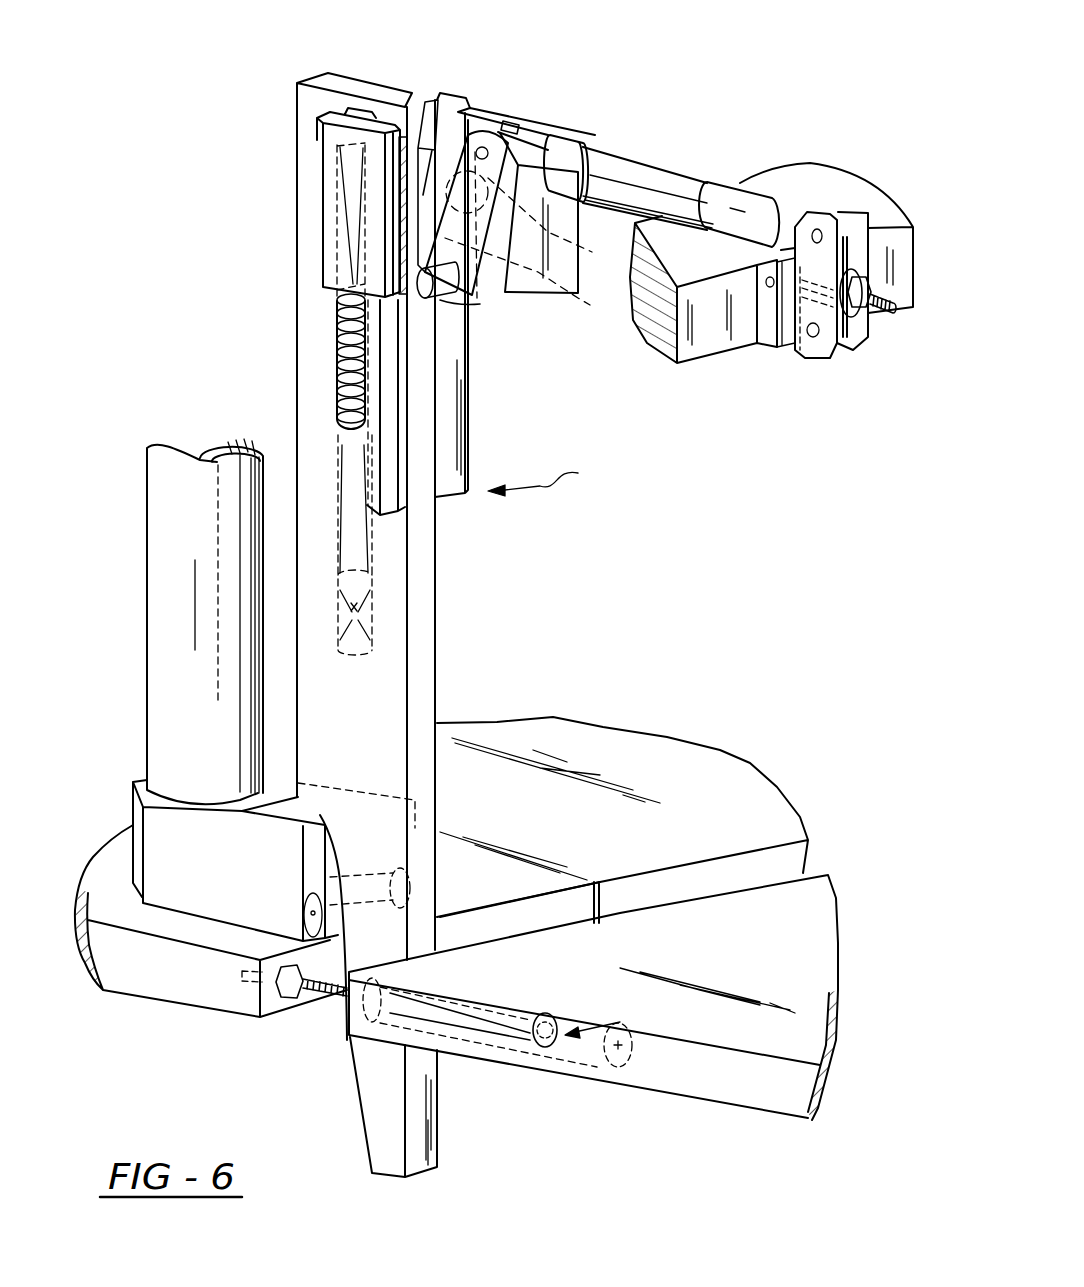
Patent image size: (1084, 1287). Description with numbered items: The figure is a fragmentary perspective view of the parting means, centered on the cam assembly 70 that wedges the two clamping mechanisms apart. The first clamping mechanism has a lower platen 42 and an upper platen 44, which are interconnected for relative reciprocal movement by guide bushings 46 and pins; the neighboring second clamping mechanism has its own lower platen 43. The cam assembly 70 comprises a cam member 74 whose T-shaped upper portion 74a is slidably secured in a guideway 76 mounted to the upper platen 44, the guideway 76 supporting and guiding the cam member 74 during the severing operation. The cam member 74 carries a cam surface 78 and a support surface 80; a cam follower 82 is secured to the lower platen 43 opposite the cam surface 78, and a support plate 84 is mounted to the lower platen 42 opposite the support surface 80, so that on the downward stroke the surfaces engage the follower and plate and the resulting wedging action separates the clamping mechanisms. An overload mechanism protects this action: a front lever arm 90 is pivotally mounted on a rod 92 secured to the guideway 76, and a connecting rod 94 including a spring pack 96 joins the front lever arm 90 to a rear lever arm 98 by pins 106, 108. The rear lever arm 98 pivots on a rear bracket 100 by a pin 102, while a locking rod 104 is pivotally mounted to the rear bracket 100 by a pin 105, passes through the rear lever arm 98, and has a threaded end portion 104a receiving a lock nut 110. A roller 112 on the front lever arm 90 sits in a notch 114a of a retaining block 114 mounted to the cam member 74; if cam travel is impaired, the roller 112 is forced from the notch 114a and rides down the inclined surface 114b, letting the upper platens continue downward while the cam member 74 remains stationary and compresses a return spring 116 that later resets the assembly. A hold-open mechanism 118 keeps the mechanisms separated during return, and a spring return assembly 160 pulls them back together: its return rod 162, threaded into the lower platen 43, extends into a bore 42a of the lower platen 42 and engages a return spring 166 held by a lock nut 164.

The lower platen 42 is at (647, 960).
The bore 42a is at (632, 1055).
The lower platen 43 is at (585, 755).
The upper platen 44 is at (807, 165).
The guide bushing 46 is at (175, 522).
The cam assembly 70 is at (549, 477).
The cam member 74 is at (418, 578).
The T-shaped upper portion 74a is at (345, 320).
The guideway 76 is at (497, 112).
The cam surface 78 is at (357, 1077).
The support surface 80 is at (425, 1133).
The cam follower 82 is at (330, 886).
The support plate 84 is at (262, 912).
The front lever arm 90 is at (462, 298).
The rod 92 is at (455, 315).
The connecting rod 94 is at (548, 124).
The spring pack 96 is at (655, 178).
The rear lever arm 98 is at (862, 216).
The rear bracket 100 is at (768, 350).
The pin 102 is at (814, 338).
The locking rod 104 is at (894, 314).
The threaded end portion 104a is at (868, 310).
The pin 105 is at (765, 290).
The pin 106 is at (480, 133).
The pin 108 is at (821, 230).
The lock nut 110 is at (893, 278).
The roller 112 is at (559, 213).
The retaining block 114 is at (443, 95).
The notch 114a is at (424, 125).
The inclined surface 114b is at (538, 232).
The return spring 116 is at (335, 345).
The hold-open mechanism 118 is at (317, 132).
The spring return assembly 160 is at (620, 1022).
The return rod 162 is at (470, 990).
The lock nut 164 is at (532, 1052).
The return spring 166 is at (525, 1003).